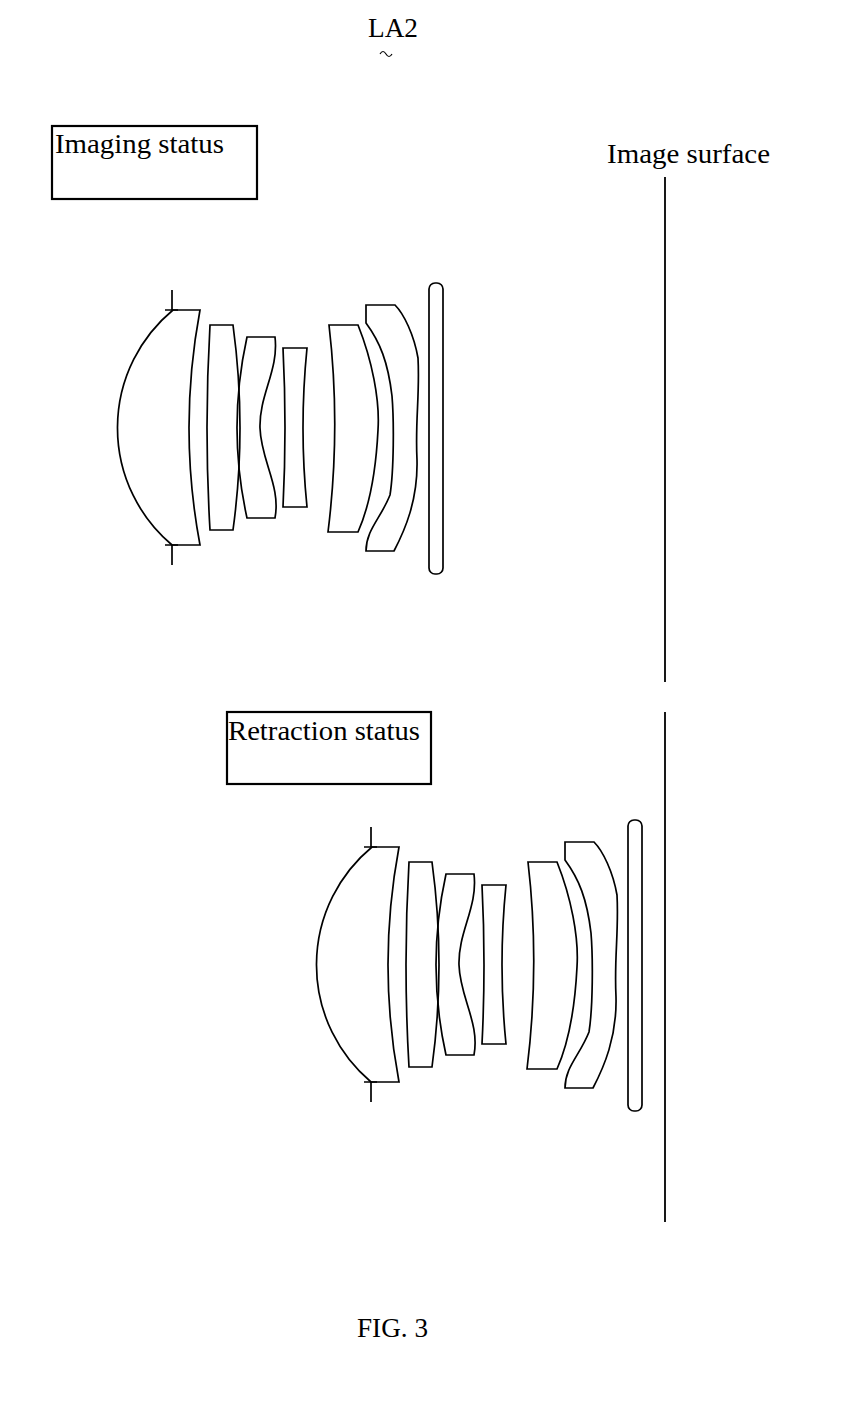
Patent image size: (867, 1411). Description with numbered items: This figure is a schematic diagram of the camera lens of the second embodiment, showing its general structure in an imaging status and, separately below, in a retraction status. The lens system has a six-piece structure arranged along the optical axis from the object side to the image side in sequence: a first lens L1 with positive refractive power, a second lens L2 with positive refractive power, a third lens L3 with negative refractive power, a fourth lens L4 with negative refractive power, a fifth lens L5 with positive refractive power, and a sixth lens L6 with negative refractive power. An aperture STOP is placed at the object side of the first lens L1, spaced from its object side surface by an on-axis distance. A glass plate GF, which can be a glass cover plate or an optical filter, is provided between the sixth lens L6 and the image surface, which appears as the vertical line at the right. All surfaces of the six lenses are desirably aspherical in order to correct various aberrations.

The first lens L1 is at (158, 415).
The second lens L2 is at (223, 414).
The third lens L3 is at (256, 412).
The fourth lens L4 is at (295, 412).
The fifth lens L5 is at (351, 412).
The sixth lens L6 is at (392, 413).
The glass plate GF is at (439, 411).
The aperture STOP is at (166, 443).